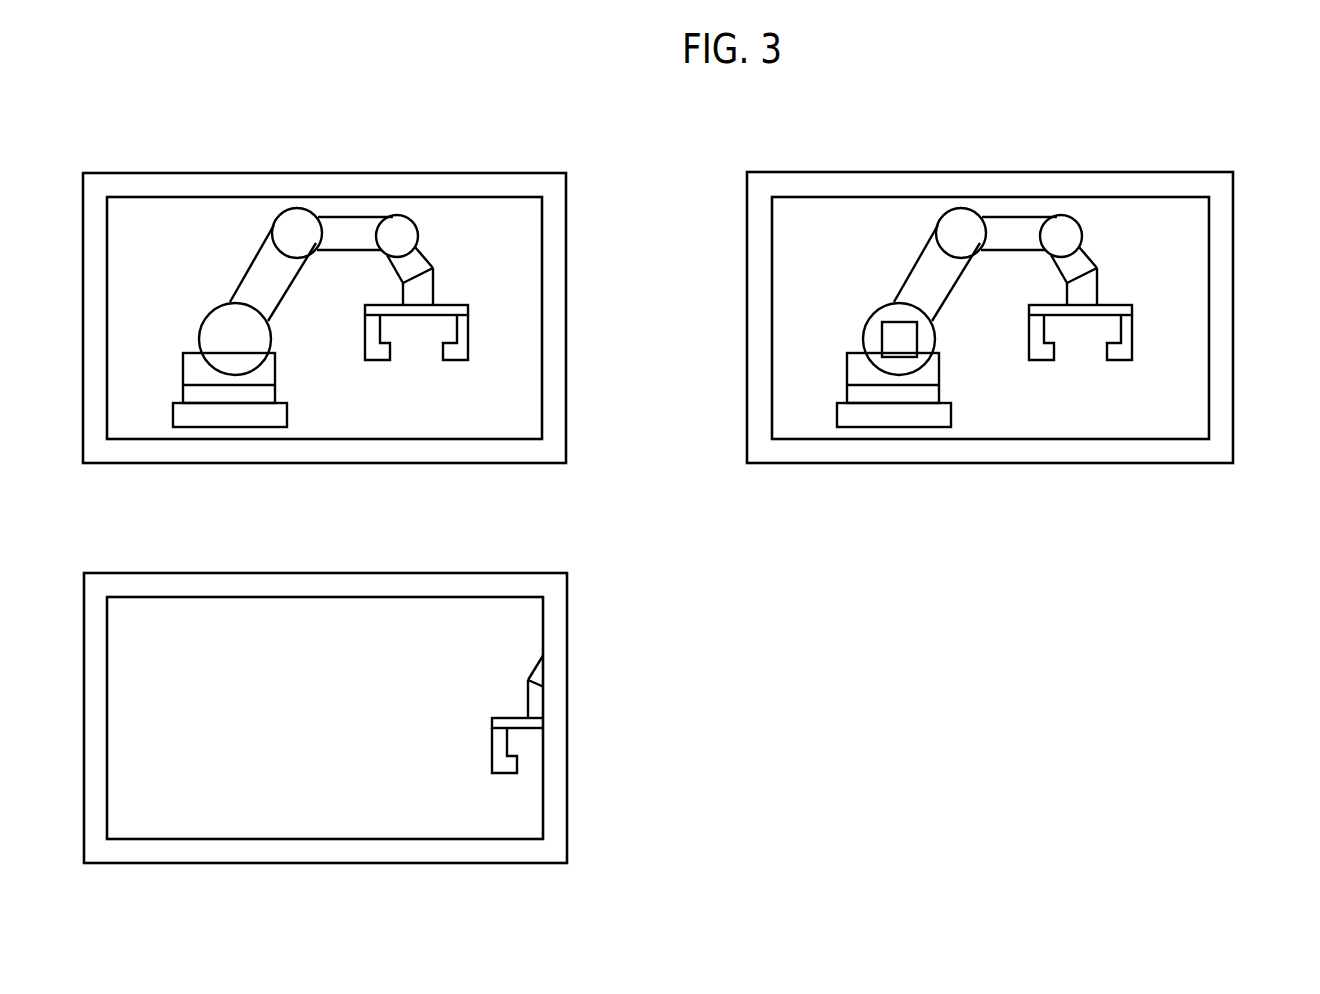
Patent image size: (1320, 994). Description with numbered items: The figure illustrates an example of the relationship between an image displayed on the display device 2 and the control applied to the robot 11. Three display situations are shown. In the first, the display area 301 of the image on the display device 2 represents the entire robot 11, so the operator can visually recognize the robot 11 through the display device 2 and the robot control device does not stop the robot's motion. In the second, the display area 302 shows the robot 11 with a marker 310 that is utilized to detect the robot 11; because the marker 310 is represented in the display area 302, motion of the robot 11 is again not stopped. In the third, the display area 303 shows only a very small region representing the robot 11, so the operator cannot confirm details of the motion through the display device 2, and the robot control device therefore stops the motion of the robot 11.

The display device 2 is at (566, 432).
The robot 11 is at (347, 232).
The display area 301 is at (542, 236).
The display area 302 is at (1209, 233).
The display area 303 is at (508, 838).
The marker 310 is at (917, 342).